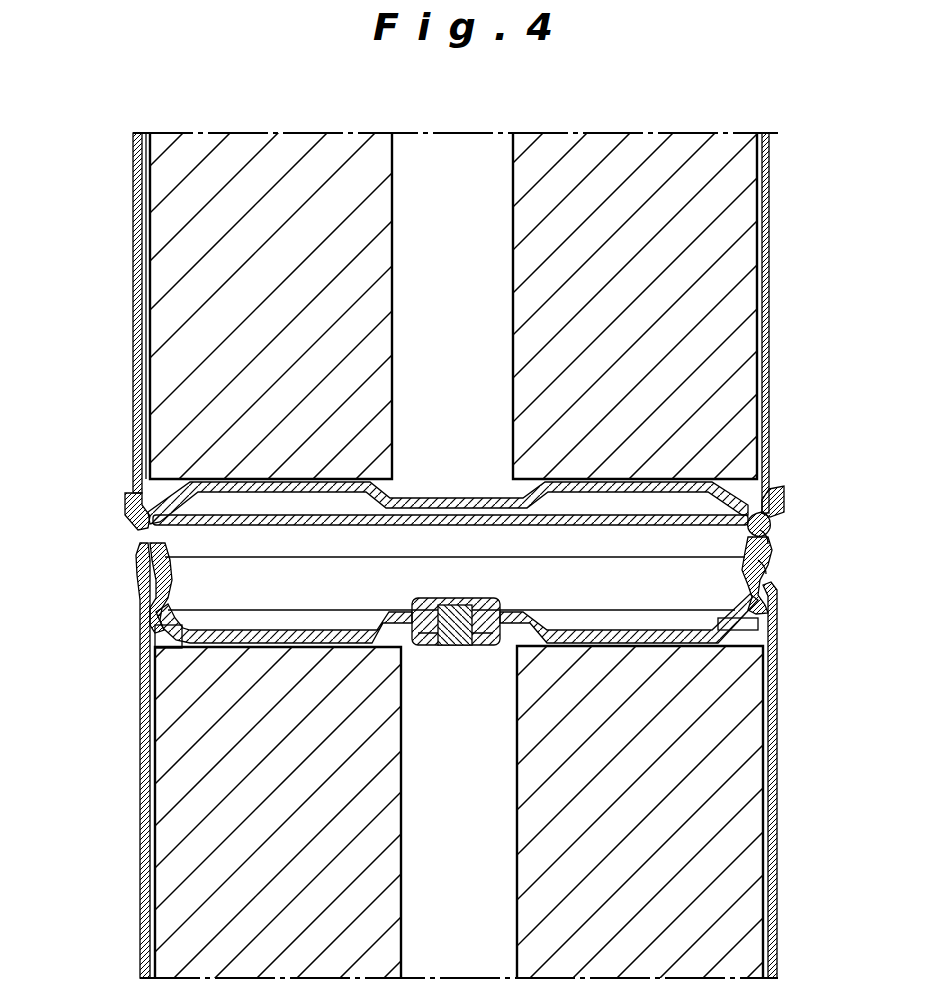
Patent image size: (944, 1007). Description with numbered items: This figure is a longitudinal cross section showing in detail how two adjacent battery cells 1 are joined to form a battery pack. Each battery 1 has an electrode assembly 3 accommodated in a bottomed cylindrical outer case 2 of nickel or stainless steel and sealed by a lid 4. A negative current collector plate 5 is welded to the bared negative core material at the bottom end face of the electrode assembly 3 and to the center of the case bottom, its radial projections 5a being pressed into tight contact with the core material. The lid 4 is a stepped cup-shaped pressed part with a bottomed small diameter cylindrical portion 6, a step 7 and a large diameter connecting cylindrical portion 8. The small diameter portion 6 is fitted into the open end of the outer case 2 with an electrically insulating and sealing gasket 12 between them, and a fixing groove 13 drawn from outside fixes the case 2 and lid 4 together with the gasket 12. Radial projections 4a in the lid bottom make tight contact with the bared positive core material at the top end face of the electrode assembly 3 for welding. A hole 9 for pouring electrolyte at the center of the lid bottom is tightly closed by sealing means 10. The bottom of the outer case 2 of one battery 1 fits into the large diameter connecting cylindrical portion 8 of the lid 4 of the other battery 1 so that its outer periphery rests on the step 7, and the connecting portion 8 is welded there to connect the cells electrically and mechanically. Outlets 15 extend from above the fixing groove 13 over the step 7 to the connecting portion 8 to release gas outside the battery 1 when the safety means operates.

The battery cell 1 is at (780, 308).
The outer case 2 is at (137, 320).
The electrode assembly 3 is at (146, 260).
The lid 4 is at (692, 648).
The radial projections 4a is at (302, 636).
The negative current collector plate 5 is at (400, 511).
The radial projections 5a is at (613, 485).
The bottomed small diameter cylindrical portion 6 is at (768, 594).
The step 7 is at (772, 523).
The large diameter connecting cylindrical portion 8 is at (784, 491).
The hole 9 is at (472, 633).
The sealing means 10 is at (452, 600).
The gasket 12 is at (769, 639).
The fixing groove 13 is at (767, 567).
The outlets 15 is at (768, 532).